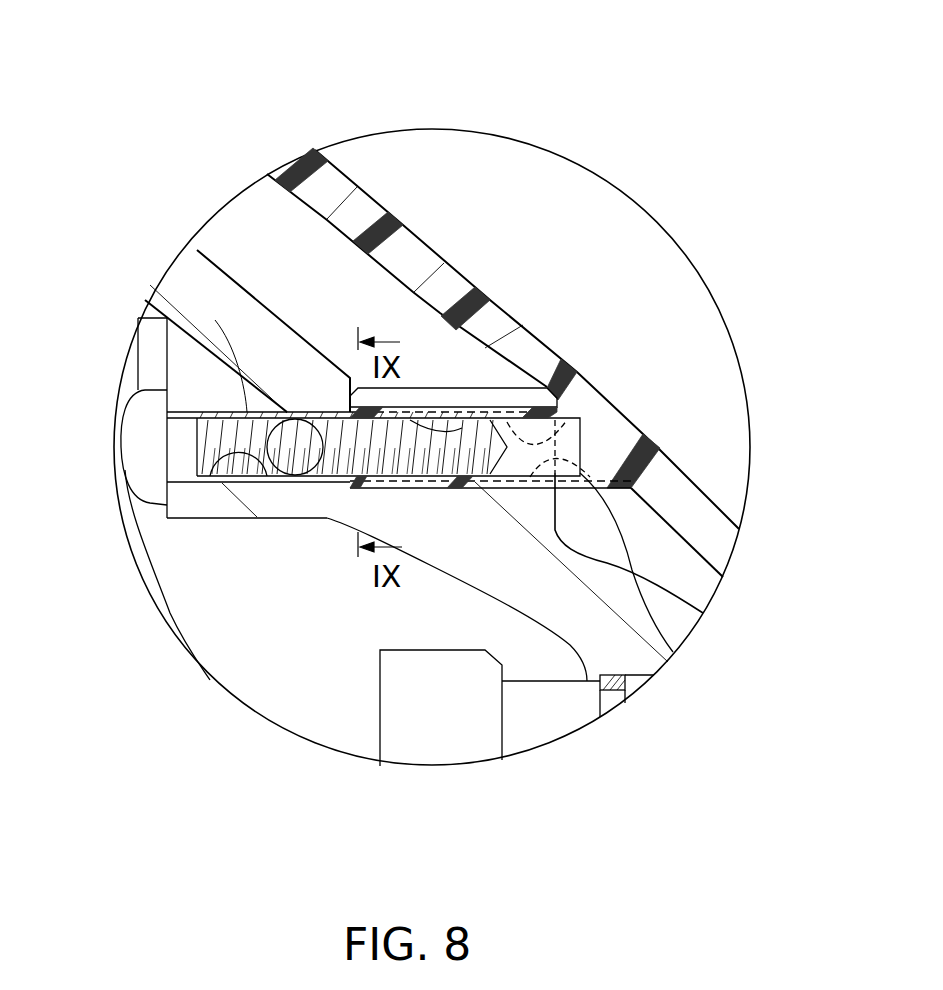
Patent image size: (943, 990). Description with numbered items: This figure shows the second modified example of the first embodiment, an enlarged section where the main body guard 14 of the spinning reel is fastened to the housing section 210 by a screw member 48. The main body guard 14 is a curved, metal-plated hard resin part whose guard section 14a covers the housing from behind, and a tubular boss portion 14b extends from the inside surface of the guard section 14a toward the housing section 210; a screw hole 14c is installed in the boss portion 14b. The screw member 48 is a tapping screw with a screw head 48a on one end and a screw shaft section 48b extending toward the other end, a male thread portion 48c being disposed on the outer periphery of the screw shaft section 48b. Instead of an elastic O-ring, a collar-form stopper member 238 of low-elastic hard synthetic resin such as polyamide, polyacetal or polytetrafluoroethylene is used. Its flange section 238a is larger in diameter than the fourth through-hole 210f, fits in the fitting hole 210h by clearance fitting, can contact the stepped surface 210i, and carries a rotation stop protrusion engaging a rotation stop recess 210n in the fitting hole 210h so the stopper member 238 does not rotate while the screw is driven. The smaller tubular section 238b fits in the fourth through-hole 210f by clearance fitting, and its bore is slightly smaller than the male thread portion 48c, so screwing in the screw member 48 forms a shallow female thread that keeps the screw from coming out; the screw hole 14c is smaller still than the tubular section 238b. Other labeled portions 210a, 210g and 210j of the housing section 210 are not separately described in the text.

The main body guard 14 is at (470, 235).
The guard section 14a is at (370, 222).
The boss portion 14b is at (464, 505).
The screw hole 14c is at (668, 662).
The screw member 48 is at (300, 404).
The screw head 48a is at (148, 453).
The screw shaft section 48b is at (185, 495).
The male thread portion 48c is at (486, 708).
The housing section 210 is at (217, 232).
The bracket wall 210a is at (238, 268).
The fourth through-hole 210f is at (210, 483).
The bracket top surface 210g is at (455, 378).
The fitting hole 210h is at (440, 392).
The stepped surface 210i is at (308, 522).
The bracket side wall 210j is at (167, 373).
The rotation stop recess 210n is at (575, 430).
The stopper member 238 is at (301, 492).
The flange section 238a is at (355, 407).
The tubular section 238b is at (215, 320).